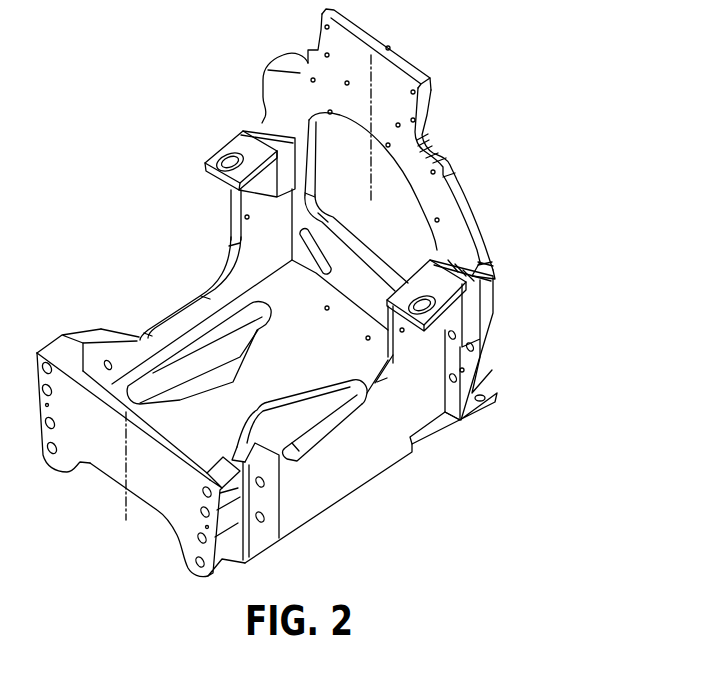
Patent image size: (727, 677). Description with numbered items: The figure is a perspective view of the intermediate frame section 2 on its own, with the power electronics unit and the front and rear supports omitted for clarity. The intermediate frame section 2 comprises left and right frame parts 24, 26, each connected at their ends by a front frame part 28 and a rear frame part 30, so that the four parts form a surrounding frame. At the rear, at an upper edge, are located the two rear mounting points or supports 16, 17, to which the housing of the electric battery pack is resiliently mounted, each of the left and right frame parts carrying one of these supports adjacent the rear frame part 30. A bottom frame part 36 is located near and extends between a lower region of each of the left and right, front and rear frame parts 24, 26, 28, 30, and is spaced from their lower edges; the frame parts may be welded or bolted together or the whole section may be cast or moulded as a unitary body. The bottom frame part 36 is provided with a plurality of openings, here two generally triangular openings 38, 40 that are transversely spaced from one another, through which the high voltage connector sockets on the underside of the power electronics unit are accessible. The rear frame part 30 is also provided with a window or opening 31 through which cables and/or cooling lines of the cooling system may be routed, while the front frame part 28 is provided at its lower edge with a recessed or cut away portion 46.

The intermediate frame section 2 is at (478, 141).
The rear mounting point or support 16 is at (426, 328).
The rear mounting point or support 17 is at (232, 132).
The left frame part 24 is at (337, 470).
The right frame part 26 is at (170, 318).
The front frame part 28 is at (105, 438).
The rear frame part 30 is at (478, 222).
The window or opening 31 is at (405, 227).
The bottom frame part 36 is at (309, 327).
The generally triangular opening 38 is at (209, 377).
The generally triangular opening 40 is at (290, 413).
The recessed or cut away portion 46 is at (152, 508).